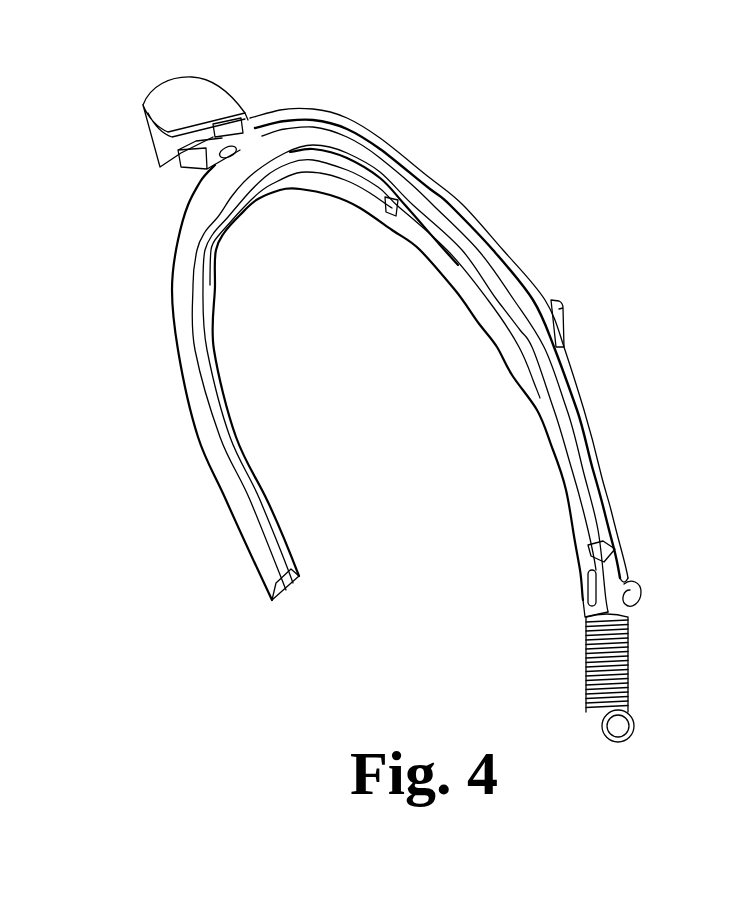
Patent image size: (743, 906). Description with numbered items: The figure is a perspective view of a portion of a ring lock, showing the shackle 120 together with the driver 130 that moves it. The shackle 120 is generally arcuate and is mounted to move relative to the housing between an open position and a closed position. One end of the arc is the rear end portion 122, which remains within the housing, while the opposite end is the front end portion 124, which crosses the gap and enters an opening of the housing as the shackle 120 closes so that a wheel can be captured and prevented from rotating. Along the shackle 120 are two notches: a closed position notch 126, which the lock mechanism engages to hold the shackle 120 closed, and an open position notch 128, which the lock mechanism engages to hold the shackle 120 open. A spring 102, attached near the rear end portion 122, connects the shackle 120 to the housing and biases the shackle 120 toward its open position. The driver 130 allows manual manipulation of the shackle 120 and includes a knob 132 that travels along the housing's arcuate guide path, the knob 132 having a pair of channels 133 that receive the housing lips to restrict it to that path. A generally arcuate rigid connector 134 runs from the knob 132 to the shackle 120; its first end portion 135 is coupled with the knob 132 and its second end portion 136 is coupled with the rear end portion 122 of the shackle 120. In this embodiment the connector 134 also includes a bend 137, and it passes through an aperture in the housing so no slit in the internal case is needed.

The spring 102 is at (614, 663).
The shackle 120 is at (346, 403).
The rear end portion 122 is at (542, 583).
The front end portion 124 is at (255, 598).
The closed position notch 126 is at (588, 551).
The open position notch 128 is at (392, 200).
The driver 130 is at (183, 107).
The knob 132 is at (175, 92).
The channels 133 is at (253, 116).
The rigid connector 134 is at (463, 205).
The first end portion 135 is at (492, 328).
The second end portion 136 is at (655, 575).
The bend 137 is at (580, 333).